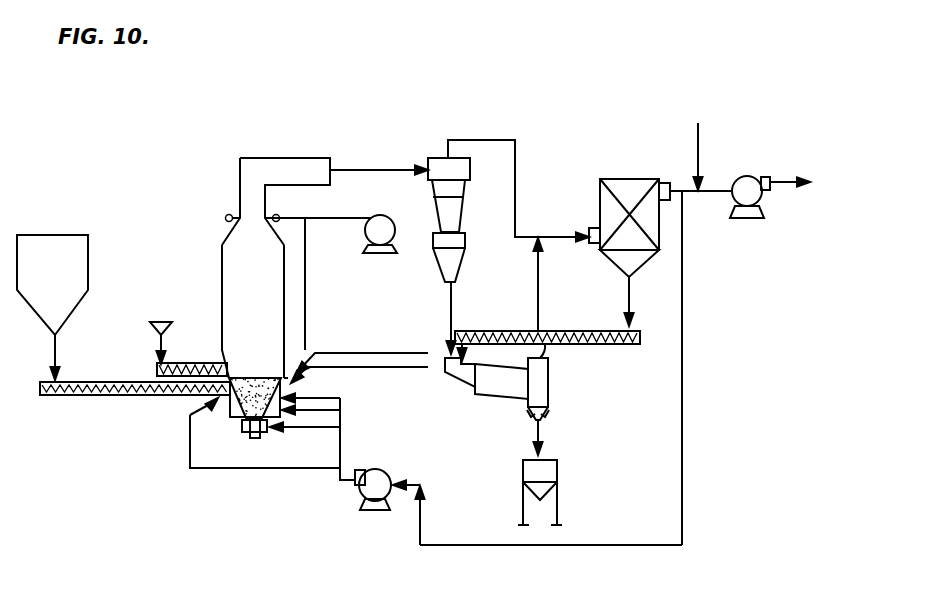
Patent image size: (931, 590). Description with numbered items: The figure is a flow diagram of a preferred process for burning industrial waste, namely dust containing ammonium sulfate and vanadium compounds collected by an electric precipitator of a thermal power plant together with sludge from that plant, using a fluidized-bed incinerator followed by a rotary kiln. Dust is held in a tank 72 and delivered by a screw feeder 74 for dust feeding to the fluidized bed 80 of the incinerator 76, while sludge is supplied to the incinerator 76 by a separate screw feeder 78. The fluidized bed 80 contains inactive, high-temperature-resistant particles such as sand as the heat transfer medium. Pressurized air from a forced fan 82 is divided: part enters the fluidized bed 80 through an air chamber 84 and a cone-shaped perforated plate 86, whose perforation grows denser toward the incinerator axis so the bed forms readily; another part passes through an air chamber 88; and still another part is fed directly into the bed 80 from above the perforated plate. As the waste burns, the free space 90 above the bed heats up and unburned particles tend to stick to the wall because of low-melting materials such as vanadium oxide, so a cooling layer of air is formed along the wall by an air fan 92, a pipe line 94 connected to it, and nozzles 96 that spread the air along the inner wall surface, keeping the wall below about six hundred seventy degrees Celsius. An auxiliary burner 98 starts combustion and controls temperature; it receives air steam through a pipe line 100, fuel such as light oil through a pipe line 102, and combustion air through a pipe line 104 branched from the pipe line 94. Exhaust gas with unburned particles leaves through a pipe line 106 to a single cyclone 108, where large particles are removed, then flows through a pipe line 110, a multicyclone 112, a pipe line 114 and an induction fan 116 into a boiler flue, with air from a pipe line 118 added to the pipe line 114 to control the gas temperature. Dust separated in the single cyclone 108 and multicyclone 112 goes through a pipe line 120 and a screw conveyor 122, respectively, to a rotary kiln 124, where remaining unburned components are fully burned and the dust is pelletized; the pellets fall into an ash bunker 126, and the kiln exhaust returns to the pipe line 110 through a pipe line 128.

The tank 72 is at (88, 262).
The screw feeder for dust feeding 74 is at (92, 396).
The incinerator 76 is at (222, 305).
The screw feeder 78 is at (211, 362).
The fluidized bed 80 is at (262, 380).
The forced fan 82 is at (360, 496).
The air chamber 84 is at (231, 418).
The cone-shaped perforated plate 86 is at (227, 403).
The air chamber 88 is at (264, 437).
The free space 90 is at (236, 268).
The air fan 92 is at (408, 192).
The pipe line 94 is at (322, 220).
The nozzles 96 is at (226, 215).
The auxiliary burner 98 is at (286, 378).
The pipe line 100 is at (360, 353).
The pipe line 102 is at (372, 370).
The pipe line 104 is at (306, 300).
The pipe line 106 is at (385, 166).
The single cyclone 108 is at (466, 217).
The pipe line 110 is at (515, 170).
The multicyclone 112 is at (620, 179).
The pipe line 114 is at (708, 195).
The induction fan 116 is at (762, 200).
The pipe line 118 is at (700, 146).
The pipe line 120 is at (454, 316).
The screw conveyor 122 is at (568, 331).
The rotary kiln 124 is at (500, 400).
The ash bunker 126 is at (558, 478).
The pipe line 128 is at (540, 284).